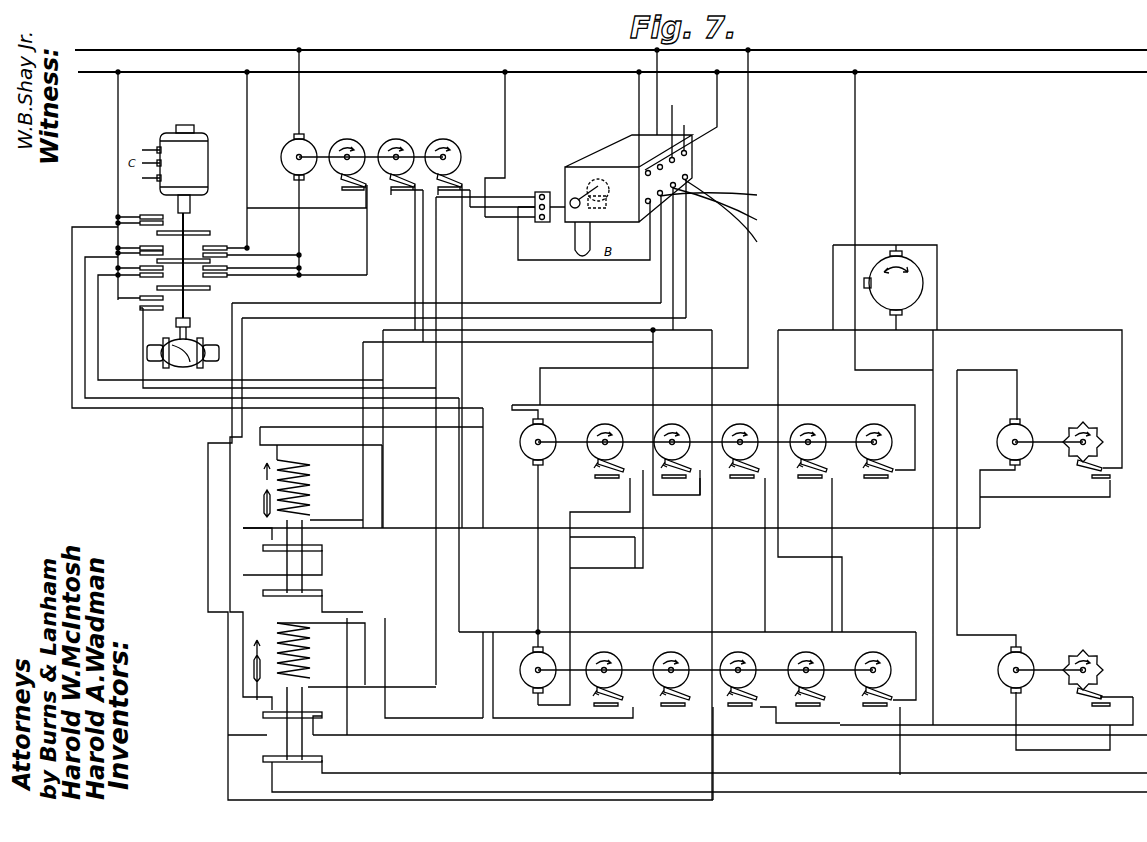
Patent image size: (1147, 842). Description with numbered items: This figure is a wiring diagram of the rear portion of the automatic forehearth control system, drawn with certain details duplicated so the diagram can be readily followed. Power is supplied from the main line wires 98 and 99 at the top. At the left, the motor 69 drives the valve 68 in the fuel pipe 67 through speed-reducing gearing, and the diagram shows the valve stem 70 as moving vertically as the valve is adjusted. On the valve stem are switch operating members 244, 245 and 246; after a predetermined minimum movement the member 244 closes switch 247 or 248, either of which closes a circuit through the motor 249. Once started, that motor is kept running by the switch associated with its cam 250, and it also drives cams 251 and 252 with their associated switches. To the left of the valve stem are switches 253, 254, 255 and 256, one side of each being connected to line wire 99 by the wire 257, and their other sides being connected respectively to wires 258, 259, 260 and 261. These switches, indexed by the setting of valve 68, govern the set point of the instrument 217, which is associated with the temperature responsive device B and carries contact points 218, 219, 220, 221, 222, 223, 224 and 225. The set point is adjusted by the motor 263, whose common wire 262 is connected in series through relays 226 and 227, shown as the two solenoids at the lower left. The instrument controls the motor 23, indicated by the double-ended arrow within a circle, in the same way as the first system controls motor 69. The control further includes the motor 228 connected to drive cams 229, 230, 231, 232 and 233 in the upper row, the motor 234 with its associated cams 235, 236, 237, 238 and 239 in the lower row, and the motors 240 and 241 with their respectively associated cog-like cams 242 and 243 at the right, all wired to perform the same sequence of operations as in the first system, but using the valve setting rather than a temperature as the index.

The main line wire 98 is at (215, 42).
The main line wire 99 is at (150, 72).
The wire 257 is at (118, 126).
The motor 69 is at (175, 169).
The valve stem 70 is at (186, 299).
The switch operating member 245 is at (188, 231).
The switch operating member 244 is at (205, 262).
The switch operating member 246 is at (212, 290).
The switch 253 is at (155, 214).
The switch 254 is at (139, 243).
The switch 255 is at (150, 280).
The switch 256 is at (160, 310).
The switch 247 is at (212, 248).
The switch 248 is at (230, 269).
The pipe 67 is at (205, 343).
The valve 68 is at (180, 368).
The wire 258 is at (86, 226).
The wire 259 is at (95, 256).
The wire 260 is at (108, 288).
The wire 261 is at (143, 347).
The motor 249 is at (296, 140).
The cam 250 is at (342, 140).
The cam 251 is at (397, 140).
The cam 252 is at (443, 140).
The motor 263 is at (537, 216).
The common wire 262 is at (510, 250).
The contact point 225 is at (598, 239).
The instrument 217 is at (585, 160).
The contact point 218 is at (670, 125).
The contact point 220 is at (690, 131).
The contact point 222 is at (658, 164).
The contact point 224 is at (645, 171).
The contact point 221 is at (721, 195).
The contact point 219 is at (728, 208).
The contact point 223 is at (734, 217).
The motor 23 is at (923, 276).
The motor 228 is at (543, 432).
The cam 229 is at (604, 424).
The cam 230 is at (693, 415).
The cam 231 is at (745, 424).
The cam 232 is at (810, 424).
The cam 233 is at (876, 424).
The motor 240 is at (1020, 428).
The cog-like cam 242 is at (1083, 422).
The relay 226 is at (312, 470).
The relay 227 is at (687, 705).
The motor 234 is at (535, 655).
The cam 235 is at (618, 662).
The cam 236 is at (686, 662).
The cam 237 is at (753, 660).
The cam 238 is at (820, 662).
The cam 239 is at (886, 664).
The motor 241 is at (998, 671).
The cog-like cam 243 is at (1083, 652).